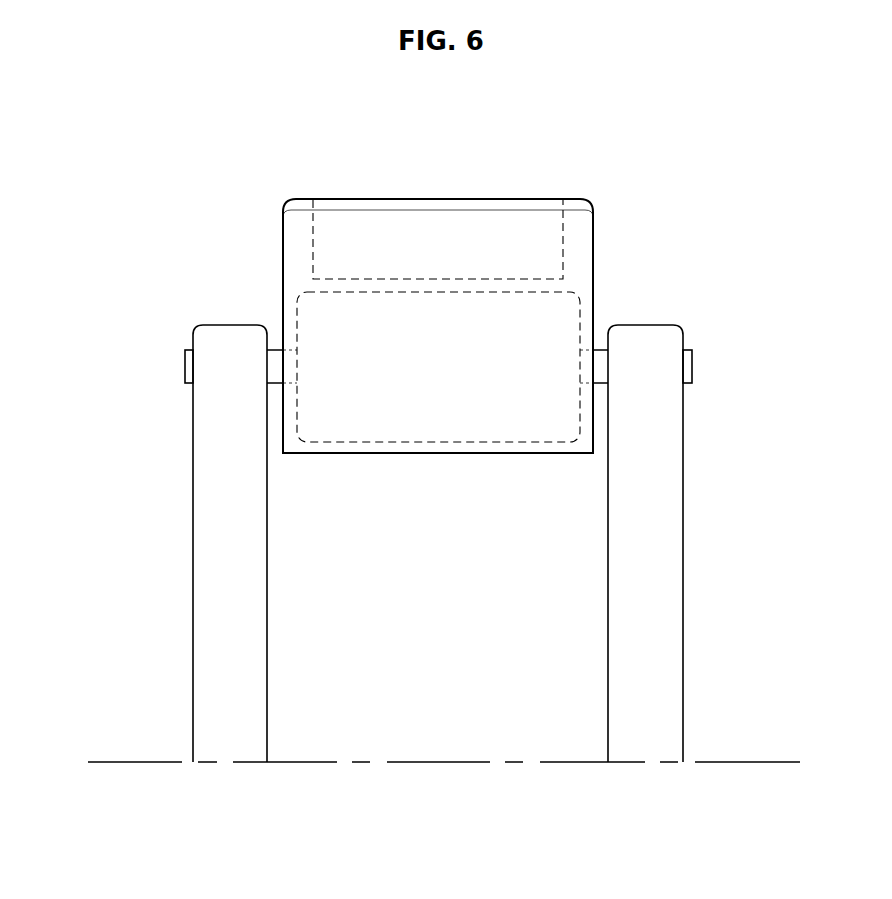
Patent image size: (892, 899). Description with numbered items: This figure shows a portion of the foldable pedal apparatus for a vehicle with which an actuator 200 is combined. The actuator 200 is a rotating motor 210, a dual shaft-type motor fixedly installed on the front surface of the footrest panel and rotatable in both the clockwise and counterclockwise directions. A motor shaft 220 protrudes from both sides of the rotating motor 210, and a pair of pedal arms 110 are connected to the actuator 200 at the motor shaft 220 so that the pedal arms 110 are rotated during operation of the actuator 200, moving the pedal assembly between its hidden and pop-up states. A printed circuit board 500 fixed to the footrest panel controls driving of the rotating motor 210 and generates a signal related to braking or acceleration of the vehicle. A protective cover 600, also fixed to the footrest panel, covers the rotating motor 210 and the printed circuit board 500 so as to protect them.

The pedal arms 110 is at (225, 652).
The actuators 200 is at (445, 274).
The rotating motors 210 is at (383, 330).
The motor shaft 220 is at (275, 368).
The printed circuit boards 500 is at (455, 230).
The protective covers 600 is at (297, 242).